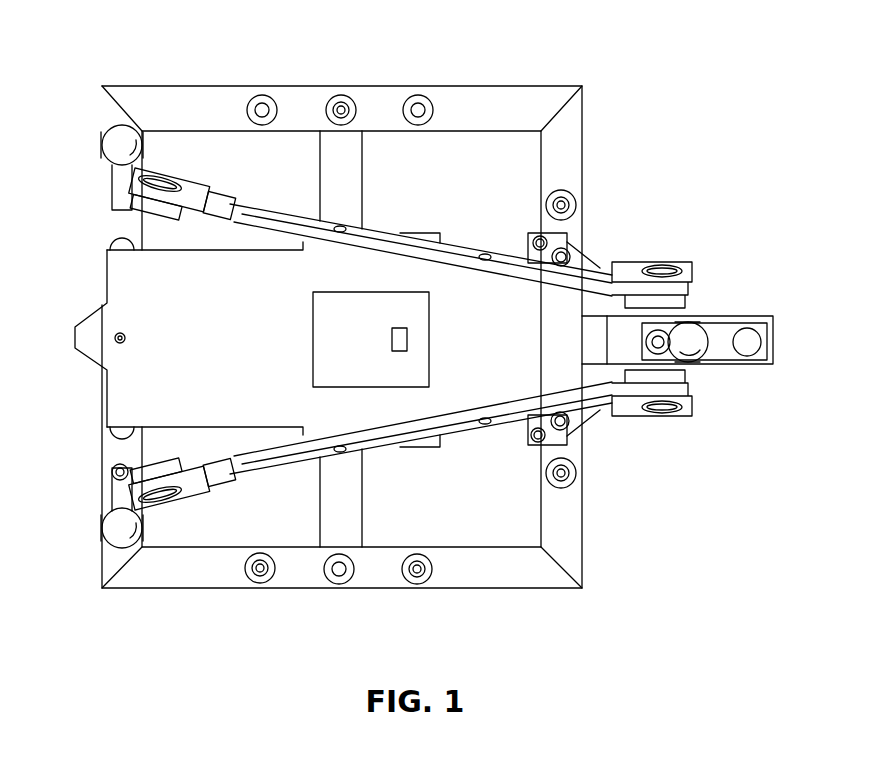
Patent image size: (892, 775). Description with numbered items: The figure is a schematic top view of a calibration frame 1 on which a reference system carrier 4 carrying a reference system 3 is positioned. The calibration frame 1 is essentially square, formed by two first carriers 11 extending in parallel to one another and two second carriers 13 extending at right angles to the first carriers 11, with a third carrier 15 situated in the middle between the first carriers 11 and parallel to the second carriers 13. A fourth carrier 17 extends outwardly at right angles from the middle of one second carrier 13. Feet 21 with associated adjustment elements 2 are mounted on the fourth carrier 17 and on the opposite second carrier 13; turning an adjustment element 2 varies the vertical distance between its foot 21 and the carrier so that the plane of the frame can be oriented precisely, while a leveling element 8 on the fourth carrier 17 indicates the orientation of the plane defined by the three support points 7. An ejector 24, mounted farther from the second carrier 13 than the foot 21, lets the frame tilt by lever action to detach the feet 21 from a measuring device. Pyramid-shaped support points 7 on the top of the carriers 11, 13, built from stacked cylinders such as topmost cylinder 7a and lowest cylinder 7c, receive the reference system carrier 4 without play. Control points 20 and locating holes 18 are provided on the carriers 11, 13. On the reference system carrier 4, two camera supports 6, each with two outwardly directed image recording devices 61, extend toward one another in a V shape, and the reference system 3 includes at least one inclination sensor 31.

The calibration frame 1 is at (744, 69).
The adjustment element 2 is at (118, 141).
The reference system 3 is at (340, 342).
The reference system carrier 4 is at (142, 385).
The camera support 6 is at (457, 252).
The support point 7 is at (338, 100).
The topmost cylinder 7a is at (338, 115).
The cylinder 7c is at (343, 100).
The leveling element 8 is at (664, 352).
The first carrier 11 is at (212, 105).
The second carrier 13 is at (565, 140).
The third carrier 15 is at (345, 185).
The fourth carrier 17 is at (720, 355).
The locating hole 18 is at (562, 205).
The control point 20 is at (262, 95).
The foot 21 is at (103, 150).
The ejector 24 is at (752, 342).
The inclination sensor 31 is at (407, 340).
The image recording device 61 is at (164, 172).